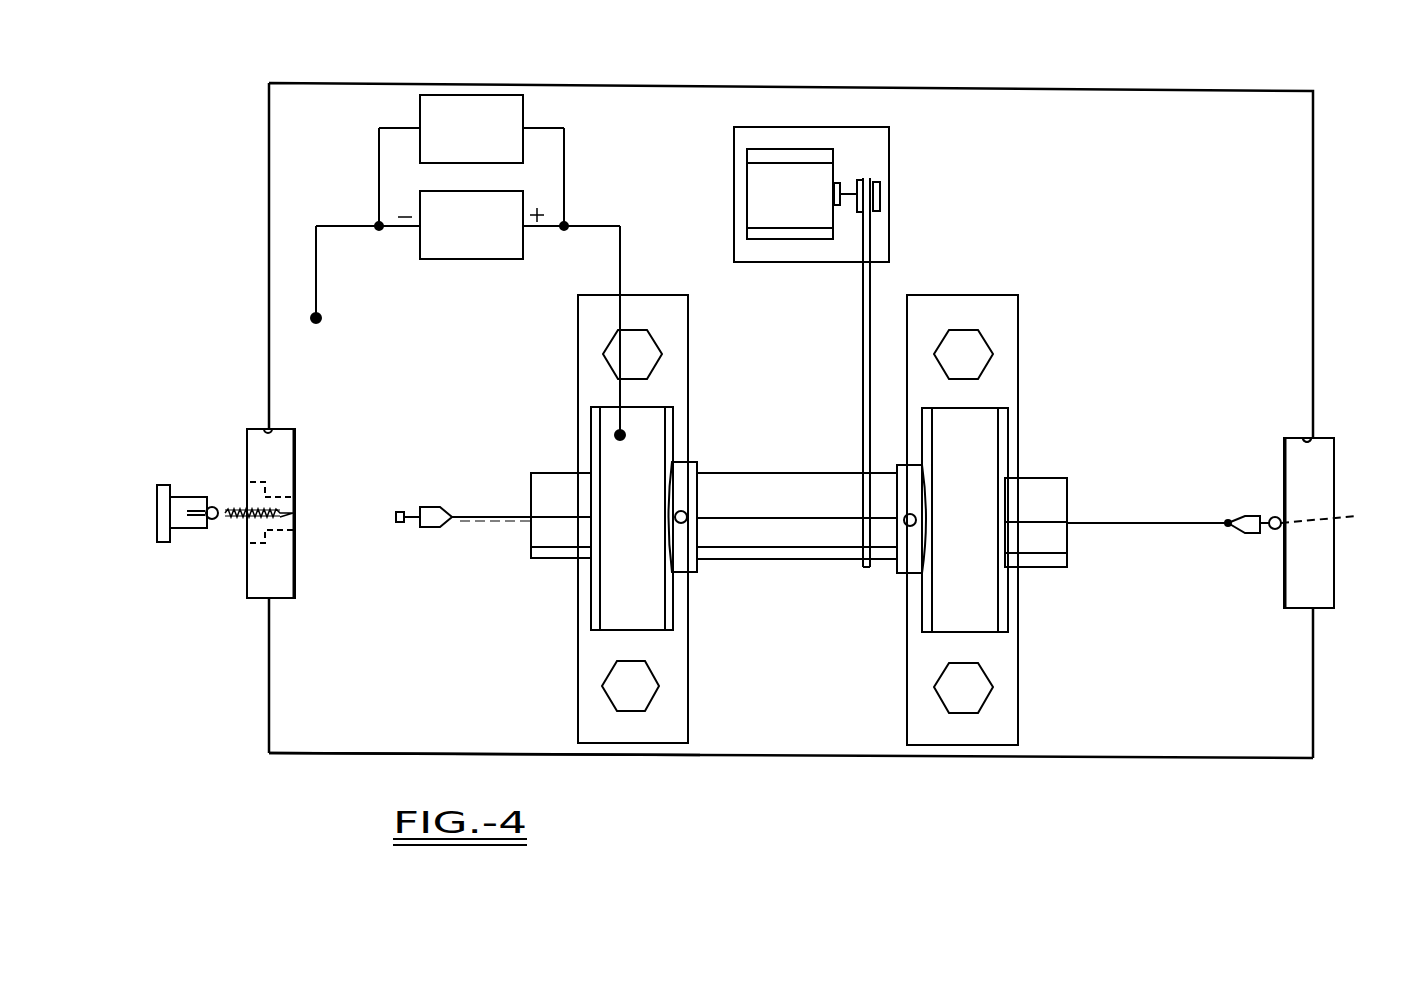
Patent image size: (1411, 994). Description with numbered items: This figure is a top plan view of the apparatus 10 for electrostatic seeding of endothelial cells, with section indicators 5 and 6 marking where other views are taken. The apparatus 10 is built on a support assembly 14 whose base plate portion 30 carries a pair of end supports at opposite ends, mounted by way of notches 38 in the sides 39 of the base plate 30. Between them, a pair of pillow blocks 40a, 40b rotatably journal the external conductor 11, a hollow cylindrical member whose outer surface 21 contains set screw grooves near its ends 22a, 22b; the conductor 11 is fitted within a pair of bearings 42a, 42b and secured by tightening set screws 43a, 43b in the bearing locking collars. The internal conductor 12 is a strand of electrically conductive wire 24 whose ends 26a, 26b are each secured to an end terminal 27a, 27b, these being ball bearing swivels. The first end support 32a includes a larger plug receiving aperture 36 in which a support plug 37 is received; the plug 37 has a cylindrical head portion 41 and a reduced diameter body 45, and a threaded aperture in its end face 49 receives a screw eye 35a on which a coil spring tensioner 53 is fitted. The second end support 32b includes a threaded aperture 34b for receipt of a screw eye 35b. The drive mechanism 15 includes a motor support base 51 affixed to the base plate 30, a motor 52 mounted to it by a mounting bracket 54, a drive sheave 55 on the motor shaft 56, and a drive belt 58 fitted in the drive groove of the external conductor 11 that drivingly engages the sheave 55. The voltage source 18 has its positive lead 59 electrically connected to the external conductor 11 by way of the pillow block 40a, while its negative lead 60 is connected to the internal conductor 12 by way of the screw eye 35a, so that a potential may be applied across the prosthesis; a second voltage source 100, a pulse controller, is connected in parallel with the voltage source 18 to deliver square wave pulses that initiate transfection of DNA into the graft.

The apparatus 10 is at (677, 772).
The external conductor 11 is at (1050, 462).
The internal conductor 12 is at (509, 498).
The support assembly 14 is at (1058, 699).
The drive mechanism 15 is at (810, 308).
The voltage source 18 is at (487, 243).
The outer surface 21 is at (777, 560).
The end 22a is at (540, 565).
The end 22b is at (1070, 565).
The electrically conductive wire 24 is at (1168, 525).
The end of the wire 26a is at (448, 508).
The end of the wire 26b is at (1230, 518).
The end terminal 27a is at (433, 507).
The end terminal 27b is at (1253, 516).
The base plate portion 30 is at (1118, 760).
The first end support 32a is at (295, 445).
The second end support 32b is at (1292, 450).
The threaded aperture 34b is at (1343, 519).
The screw eye 35a is at (213, 520).
The screw eye 35b is at (1277, 530).
The plug receiving aperture 36 is at (293, 530).
The support plug 37 is at (157, 492).
The notches 38 is at (1310, 440).
The sides 39 is at (268, 352).
The pillow block 40a is at (607, 615).
The pillow block 40b is at (990, 600).
The head portion 41 is at (157, 540).
The bearing 42a is at (688, 468).
The bearing 42b is at (917, 540).
The set screw 43a is at (687, 513).
The set screw 43b is at (915, 518).
The reduced diameter body 45 is at (220, 549).
The end face 49 is at (214, 505).
The motor support base 51 is at (889, 136).
The motor 52 is at (757, 185).
The coil spring tensioner 53 is at (293, 497).
The mounting bracket 54 is at (752, 233).
The drive sheave 55 is at (881, 196).
The motor shaft 56 is at (857, 190).
The drive belt 58 is at (871, 240).
The positive lead 59 is at (573, 224).
The negative lead 60 is at (362, 223).
The second voltage source 100 is at (471, 129).
The section line 5 is at (477, 488).
The section line 6 is at (865, 25).